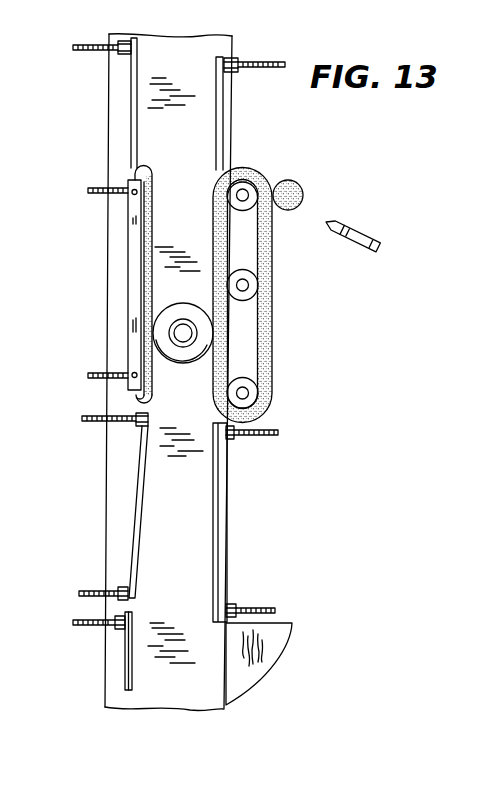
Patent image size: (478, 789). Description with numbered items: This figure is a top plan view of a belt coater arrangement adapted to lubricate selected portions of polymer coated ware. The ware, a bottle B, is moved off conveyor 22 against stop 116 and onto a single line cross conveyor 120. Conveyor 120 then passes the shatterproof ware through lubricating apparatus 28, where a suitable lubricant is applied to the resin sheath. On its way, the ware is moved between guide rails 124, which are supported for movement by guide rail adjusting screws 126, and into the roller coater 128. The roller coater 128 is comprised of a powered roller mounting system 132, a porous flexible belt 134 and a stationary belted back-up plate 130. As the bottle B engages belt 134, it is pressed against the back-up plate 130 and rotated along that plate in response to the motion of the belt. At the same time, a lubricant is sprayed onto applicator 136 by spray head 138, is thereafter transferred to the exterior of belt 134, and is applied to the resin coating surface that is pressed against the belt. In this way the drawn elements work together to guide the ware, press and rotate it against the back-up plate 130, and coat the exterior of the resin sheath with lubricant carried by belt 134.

The lubricating apparatus 28 is at (70, 170).
The single line cross conveyor 120 is at (170, 703).
The stationary belted back-up plate 130 is at (152, 218).
The bottle B is at (179, 359).
The porous flexible belt 134 is at (272, 334).
The roller coater 128 is at (281, 302).
The powered roller mounting system 132 is at (252, 392).
The applicator 136 is at (290, 190).
The spray head 138 is at (372, 205).
The guide rail adjusting screws 126 is at (276, 429).
The guide rails 124 is at (218, 506).
The conveyor 22 is at (285, 632).
The stop 116 is at (127, 672).